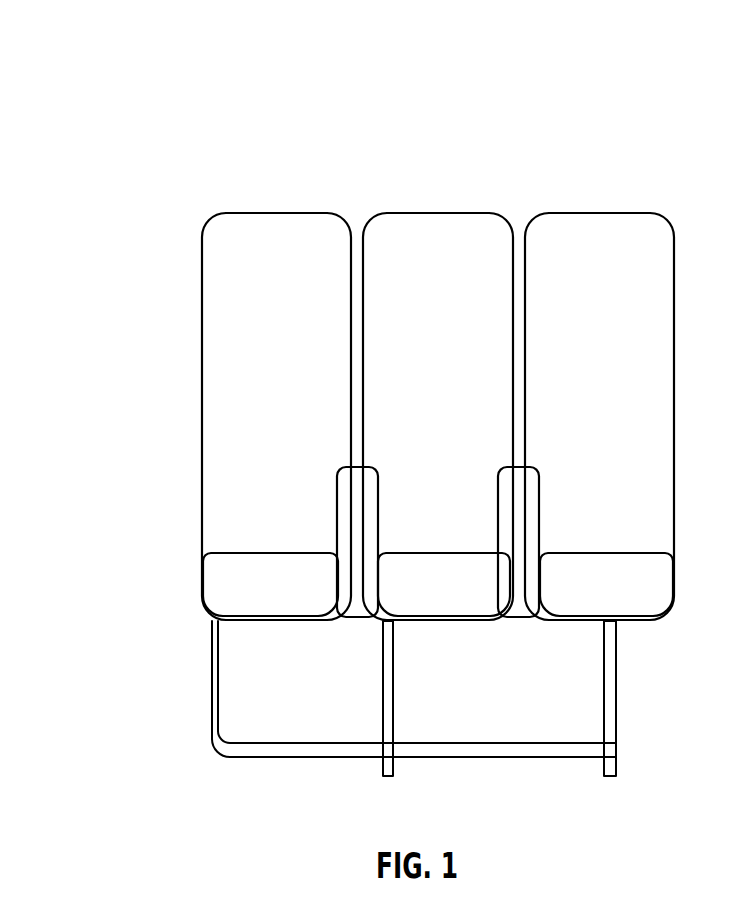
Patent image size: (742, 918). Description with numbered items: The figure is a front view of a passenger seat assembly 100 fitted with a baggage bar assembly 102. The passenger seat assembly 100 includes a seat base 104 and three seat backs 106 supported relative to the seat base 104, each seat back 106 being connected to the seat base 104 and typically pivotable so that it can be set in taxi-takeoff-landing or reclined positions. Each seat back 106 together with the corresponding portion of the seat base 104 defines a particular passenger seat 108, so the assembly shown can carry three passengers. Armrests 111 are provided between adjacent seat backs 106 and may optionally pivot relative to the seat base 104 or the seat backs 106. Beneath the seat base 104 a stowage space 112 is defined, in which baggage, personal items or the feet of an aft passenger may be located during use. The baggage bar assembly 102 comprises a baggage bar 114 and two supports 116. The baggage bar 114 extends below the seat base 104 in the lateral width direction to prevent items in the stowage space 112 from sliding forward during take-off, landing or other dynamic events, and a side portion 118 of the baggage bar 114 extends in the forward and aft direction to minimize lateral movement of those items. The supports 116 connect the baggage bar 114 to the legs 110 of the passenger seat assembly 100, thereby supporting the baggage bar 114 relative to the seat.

The passenger seat assembly 100 is at (293, 112).
The baggage bar assembly 102 is at (406, 757).
The seat base 104 is at (639, 578).
The seat back 106 is at (316, 237).
The passenger seat 108 is at (238, 237).
The leg 110 is at (385, 725).
The armrest 111 is at (353, 497).
The stowage space 112 is at (345, 731).
The baggage bar 114 is at (414, 786).
The support 116 is at (392, 777).
The side portion 118 is at (217, 712).